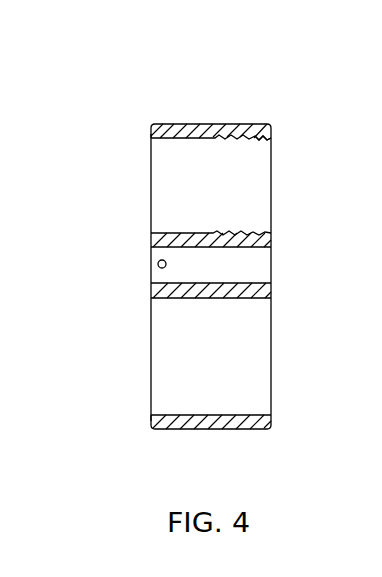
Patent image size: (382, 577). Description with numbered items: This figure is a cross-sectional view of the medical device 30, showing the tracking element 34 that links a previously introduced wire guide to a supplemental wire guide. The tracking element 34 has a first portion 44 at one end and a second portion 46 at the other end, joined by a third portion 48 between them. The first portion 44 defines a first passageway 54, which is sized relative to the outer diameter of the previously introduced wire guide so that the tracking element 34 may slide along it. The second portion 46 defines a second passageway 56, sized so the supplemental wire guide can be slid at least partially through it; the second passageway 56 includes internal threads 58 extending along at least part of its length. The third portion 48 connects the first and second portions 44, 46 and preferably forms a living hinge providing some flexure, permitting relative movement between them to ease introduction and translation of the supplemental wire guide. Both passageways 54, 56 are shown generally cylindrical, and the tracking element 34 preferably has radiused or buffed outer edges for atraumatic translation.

The reactor vessel 30 is at (128, 89).
The tracking element 34 is at (193, 125).
The internal threads 58 is at (262, 140).
The second portion 46 is at (155, 134).
The second passageway 56 is at (172, 231).
The third portion 48 is at (263, 265).
The first passageway 54 is at (254, 417).
The first portion 44 is at (152, 419).